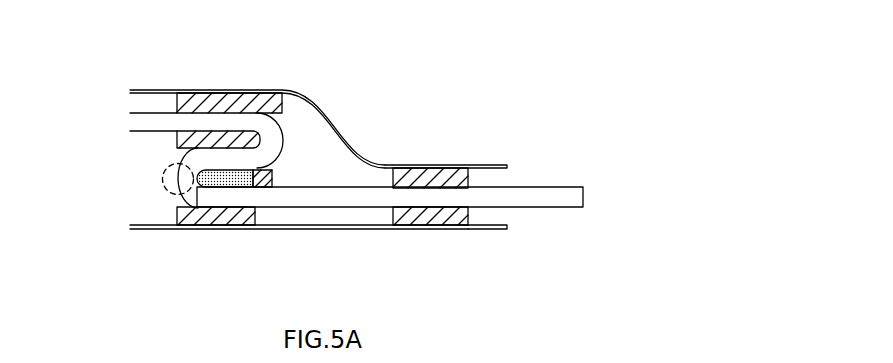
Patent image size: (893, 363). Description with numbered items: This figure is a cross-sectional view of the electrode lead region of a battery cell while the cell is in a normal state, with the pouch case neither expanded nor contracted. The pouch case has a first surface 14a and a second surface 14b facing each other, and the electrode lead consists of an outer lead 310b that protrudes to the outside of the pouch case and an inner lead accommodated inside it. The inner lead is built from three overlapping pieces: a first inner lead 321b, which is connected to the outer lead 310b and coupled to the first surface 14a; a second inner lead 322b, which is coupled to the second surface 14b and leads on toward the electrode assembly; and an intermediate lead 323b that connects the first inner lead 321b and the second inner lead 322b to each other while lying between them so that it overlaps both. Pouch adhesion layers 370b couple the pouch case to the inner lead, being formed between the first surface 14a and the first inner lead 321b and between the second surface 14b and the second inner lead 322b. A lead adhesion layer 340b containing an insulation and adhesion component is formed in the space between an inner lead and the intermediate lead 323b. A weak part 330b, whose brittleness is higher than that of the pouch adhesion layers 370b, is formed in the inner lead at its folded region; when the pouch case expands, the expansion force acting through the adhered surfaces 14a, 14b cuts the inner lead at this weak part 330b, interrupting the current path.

The outer lead 310b is at (553, 187).
The first inner lead 321b is at (322, 197).
The second inner lead 322b is at (158, 122).
The intermediate lead 323b is at (203, 155).
The weak part 330b is at (156, 176).
The lead adhesion layer 340b is at (203, 135).
The pouch adhesion layer 370b is at (272, 102).
The first surface 14a is at (448, 229).
The second surface 14b is at (374, 163).